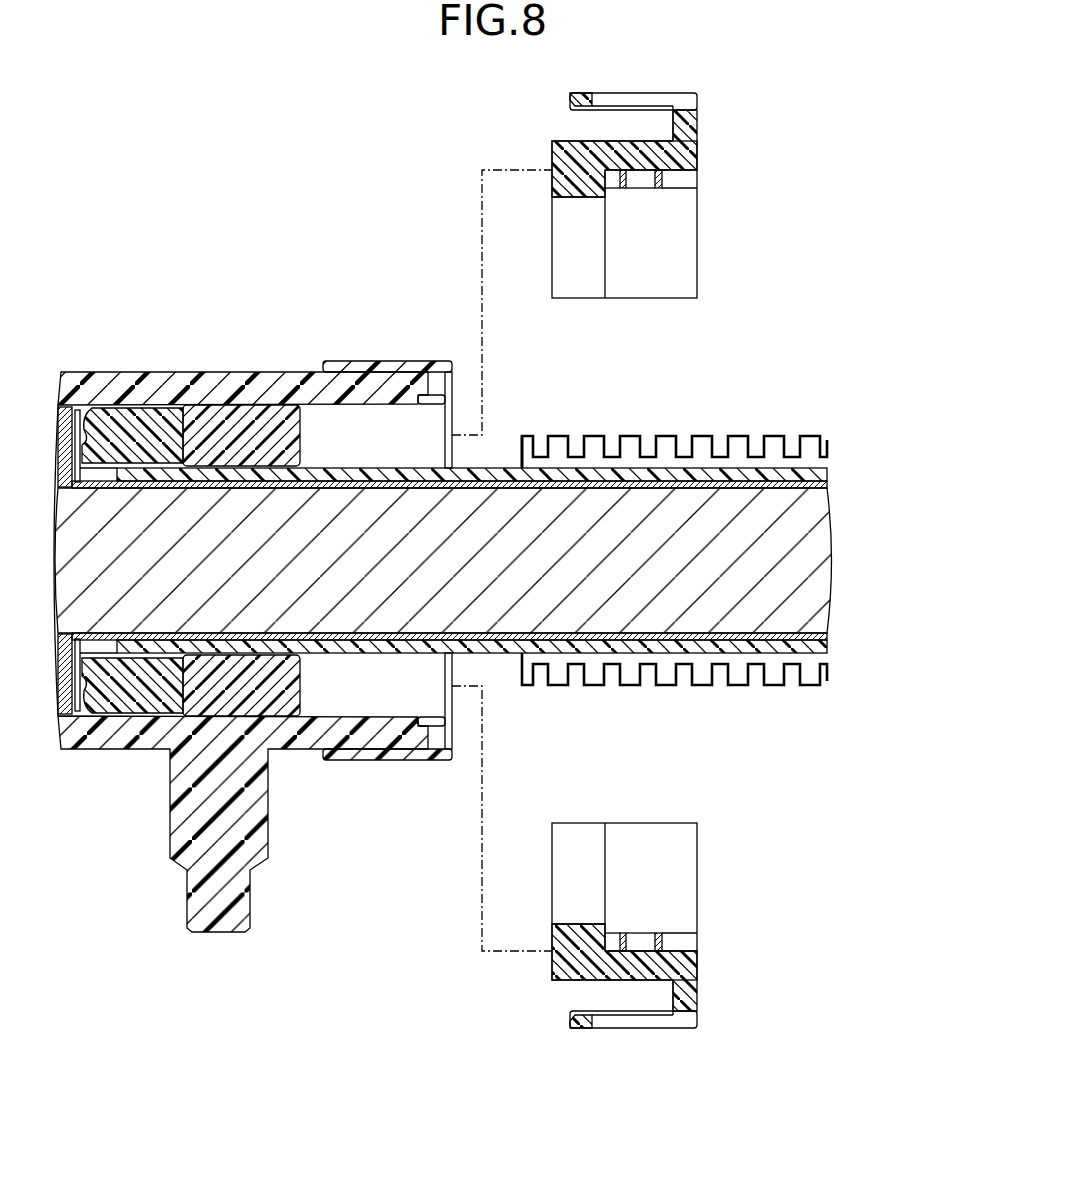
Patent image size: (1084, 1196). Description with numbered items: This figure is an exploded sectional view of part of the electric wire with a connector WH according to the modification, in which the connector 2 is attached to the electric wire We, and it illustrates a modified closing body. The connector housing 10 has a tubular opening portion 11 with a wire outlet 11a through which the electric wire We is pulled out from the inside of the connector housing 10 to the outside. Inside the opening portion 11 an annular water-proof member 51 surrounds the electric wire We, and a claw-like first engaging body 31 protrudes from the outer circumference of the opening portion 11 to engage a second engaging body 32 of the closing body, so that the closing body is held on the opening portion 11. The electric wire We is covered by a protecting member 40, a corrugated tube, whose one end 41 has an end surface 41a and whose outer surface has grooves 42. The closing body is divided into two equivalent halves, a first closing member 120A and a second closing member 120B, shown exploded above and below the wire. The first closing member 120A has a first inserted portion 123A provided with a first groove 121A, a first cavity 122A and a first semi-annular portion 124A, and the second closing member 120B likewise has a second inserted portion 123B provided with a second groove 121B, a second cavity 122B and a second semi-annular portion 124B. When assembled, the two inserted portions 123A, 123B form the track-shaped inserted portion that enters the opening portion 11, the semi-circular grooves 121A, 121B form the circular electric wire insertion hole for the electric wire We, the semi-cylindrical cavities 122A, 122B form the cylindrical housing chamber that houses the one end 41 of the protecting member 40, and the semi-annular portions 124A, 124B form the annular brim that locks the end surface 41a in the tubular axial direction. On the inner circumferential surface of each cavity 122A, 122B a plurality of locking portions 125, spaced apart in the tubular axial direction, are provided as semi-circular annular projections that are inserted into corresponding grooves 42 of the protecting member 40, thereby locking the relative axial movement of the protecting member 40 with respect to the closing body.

The connector 2 is at (258, 583).
The connector housing 10 is at (258, 585).
The opening portion 11 is at (258, 620).
The wire outlet 11a is at (400, 424).
The annular water-proof member 51 is at (235, 408).
The second engaging body 32 is at (355, 830).
The first engaging body 31 is at (580, 97).
The protecting member 40 is at (472, 535).
The one end of the protecting member 41 is at (658, 549).
The end surface 41a is at (522, 456).
The groove 42 is at (540, 437).
The electric wire with a connector WH is at (529, 535).
The electric wire We is at (832, 568).
The first closing member 120A is at (631, 559).
The second closing member 120B is at (635, 911).
The first groove 121A is at (580, 228).
The second groove 121B is at (580, 893).
The first cavity 122A is at (660, 275).
The second cavity 122B is at (660, 846).
The first inserted portion 123A is at (580, 140).
The second inserted portion 123B is at (580, 980).
The first semi-annular portion 124A is at (605, 192).
The second semi-annular portion 124B is at (605, 929).
The locking portion 125 is at (630, 180).